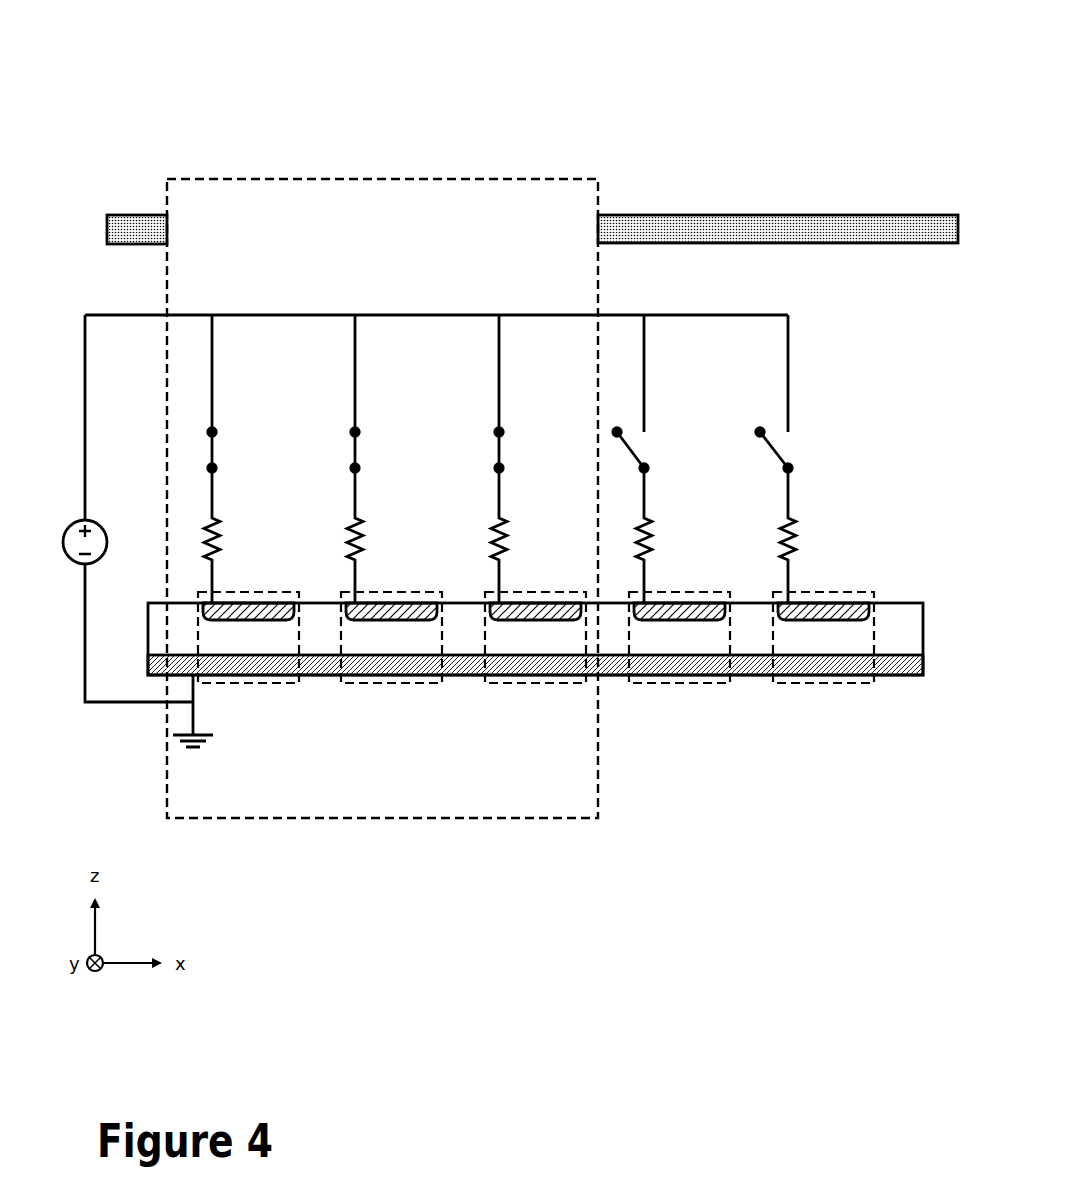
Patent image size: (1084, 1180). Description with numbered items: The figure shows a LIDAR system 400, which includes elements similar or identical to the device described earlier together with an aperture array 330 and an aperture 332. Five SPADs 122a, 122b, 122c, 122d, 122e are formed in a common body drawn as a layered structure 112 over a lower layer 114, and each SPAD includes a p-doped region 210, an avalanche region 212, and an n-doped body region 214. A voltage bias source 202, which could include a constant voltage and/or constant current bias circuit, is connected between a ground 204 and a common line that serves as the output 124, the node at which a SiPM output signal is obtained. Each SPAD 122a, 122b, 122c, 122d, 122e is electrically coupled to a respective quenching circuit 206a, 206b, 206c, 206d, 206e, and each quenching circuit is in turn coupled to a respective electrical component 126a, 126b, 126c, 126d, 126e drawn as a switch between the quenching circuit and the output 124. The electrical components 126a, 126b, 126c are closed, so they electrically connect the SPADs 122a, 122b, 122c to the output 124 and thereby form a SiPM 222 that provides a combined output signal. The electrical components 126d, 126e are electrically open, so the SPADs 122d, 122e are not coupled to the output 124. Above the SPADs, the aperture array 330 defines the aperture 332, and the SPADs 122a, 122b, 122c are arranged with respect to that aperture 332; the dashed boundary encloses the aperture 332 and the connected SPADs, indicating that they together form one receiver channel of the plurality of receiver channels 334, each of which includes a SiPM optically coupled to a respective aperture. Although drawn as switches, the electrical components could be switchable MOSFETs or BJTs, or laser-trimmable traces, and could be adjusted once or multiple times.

The LIDAR system 400 is at (868, 88).
The aperture 332 is at (310, 208).
The SiPM 222 is at (374, 471).
The receiver channels 334 is at (374, 471).
The aperture array 330 is at (670, 213).
The output 124 is at (97, 313).
The voltage bias source 202 is at (100, 521).
The ground 204 is at (198, 718).
The substrate support body 112 is at (897, 603).
The base layer 114 is at (897, 675).
The p-doped region 210 is at (283, 620).
The avalanche region 212 is at (463, 638).
The n-doped body region 214 is at (758, 668).
The electrical component 126a is at (214, 462).
The electrical component 126b is at (357, 462).
The electrical component 126c is at (501, 462).
The electrical component 126d is at (641, 456).
The electrical component 126e is at (786, 456).
The quenching circuit 206a is at (216, 531).
The quenching circuit 206b is at (359, 531).
The quenching circuit 206c is at (503, 531).
The quenching circuit 206d is at (648, 532).
The quenching circuit 206e is at (792, 532).
The SPAD 122a is at (258, 592).
The SPAD 122b is at (401, 592).
The SPAD 122c is at (545, 592).
The SPAD 122d is at (692, 592).
The SPAD 122e is at (835, 592).